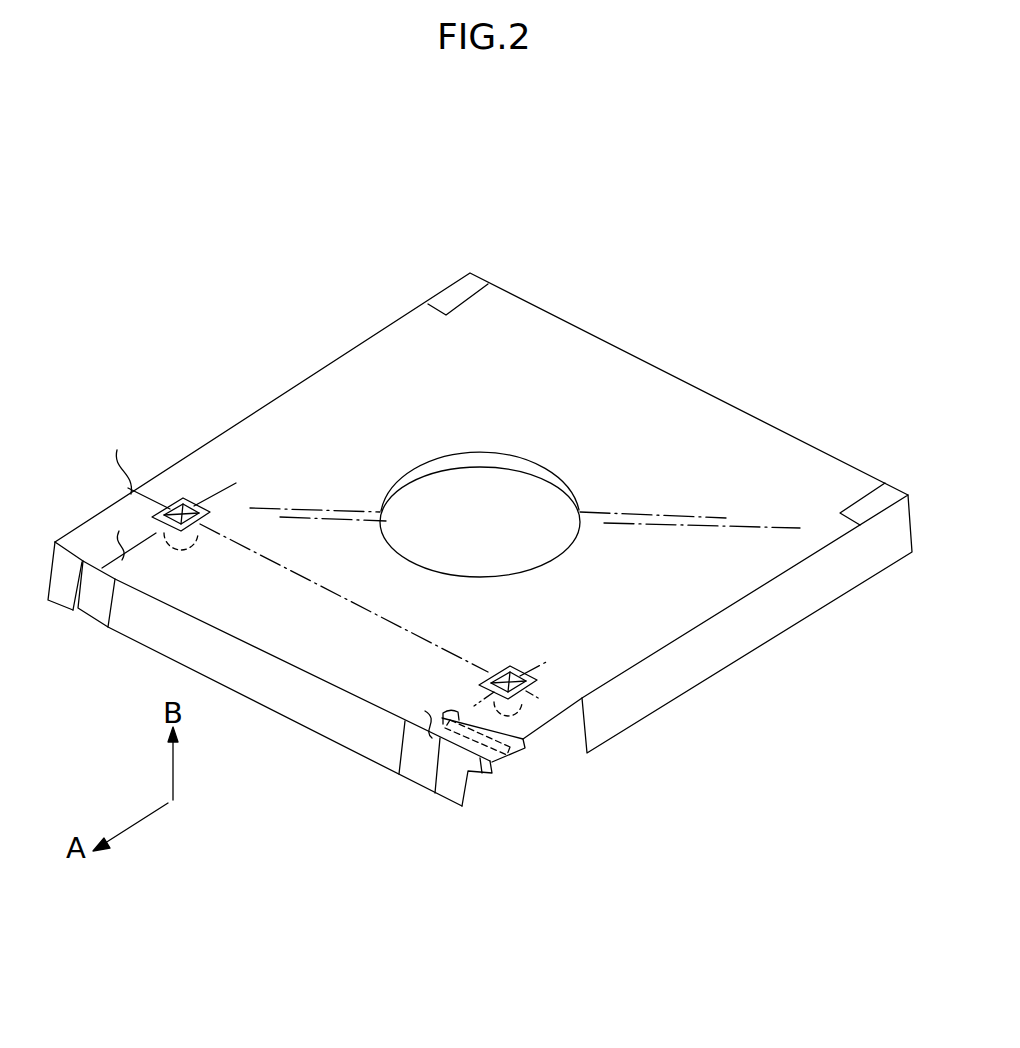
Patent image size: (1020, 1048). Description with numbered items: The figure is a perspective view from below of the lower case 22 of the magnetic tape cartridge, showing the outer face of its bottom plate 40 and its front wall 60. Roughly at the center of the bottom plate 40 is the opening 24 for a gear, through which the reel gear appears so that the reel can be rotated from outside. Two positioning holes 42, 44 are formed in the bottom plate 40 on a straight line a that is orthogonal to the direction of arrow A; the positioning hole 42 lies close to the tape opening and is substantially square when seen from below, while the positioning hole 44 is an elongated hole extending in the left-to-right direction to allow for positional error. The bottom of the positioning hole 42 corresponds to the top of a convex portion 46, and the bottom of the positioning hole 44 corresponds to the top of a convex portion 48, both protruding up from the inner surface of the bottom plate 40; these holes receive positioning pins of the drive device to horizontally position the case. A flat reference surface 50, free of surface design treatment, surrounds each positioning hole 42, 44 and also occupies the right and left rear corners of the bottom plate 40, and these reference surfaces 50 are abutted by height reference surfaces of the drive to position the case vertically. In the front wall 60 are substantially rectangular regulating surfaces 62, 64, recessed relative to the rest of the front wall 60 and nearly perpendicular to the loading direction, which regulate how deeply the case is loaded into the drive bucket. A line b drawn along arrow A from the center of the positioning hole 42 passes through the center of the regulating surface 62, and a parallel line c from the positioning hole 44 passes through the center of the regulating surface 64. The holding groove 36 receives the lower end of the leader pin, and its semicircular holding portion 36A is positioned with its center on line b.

The lower case 22 is at (707, 388).
The opening for a gear 24 is at (492, 541).
The holding groove 36 is at (487, 712).
The holding portion 36A is at (462, 710).
The bottom plate 40 is at (276, 714).
The positioning hole 42 is at (513, 678).
The positioning hole 44 is at (181, 503).
The convex portion 46 is at (528, 716).
The convex portion 48 is at (197, 562).
The reference surface 50 is at (477, 292).
The front wall 60 is at (278, 700).
The regulating surface 62 is at (423, 777).
The regulating surface 64 is at (92, 593).